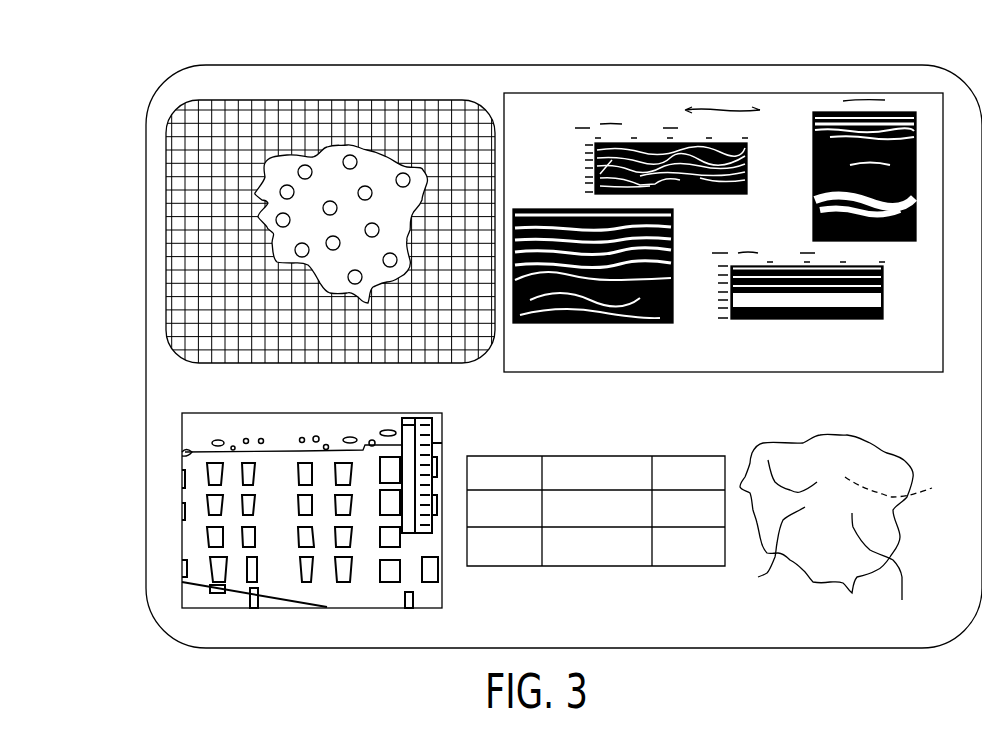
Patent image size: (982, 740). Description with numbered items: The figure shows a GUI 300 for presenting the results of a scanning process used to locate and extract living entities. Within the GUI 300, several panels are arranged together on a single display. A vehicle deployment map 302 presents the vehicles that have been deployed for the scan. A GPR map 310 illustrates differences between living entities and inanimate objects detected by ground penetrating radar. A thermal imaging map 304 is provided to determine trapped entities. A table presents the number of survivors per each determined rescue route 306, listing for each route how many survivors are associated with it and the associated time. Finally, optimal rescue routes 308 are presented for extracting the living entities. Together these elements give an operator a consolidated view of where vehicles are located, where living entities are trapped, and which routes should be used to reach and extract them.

The GUI 300 is at (463, 65).
The vehicle deployment map 302 is at (166, 253).
The thermal imaging map 304 is at (182, 522).
The number of survivors per each determined rescue route 306 is at (593, 566).
The optimal rescue routes 308 is at (887, 453).
The GPR map 310 is at (713, 92).